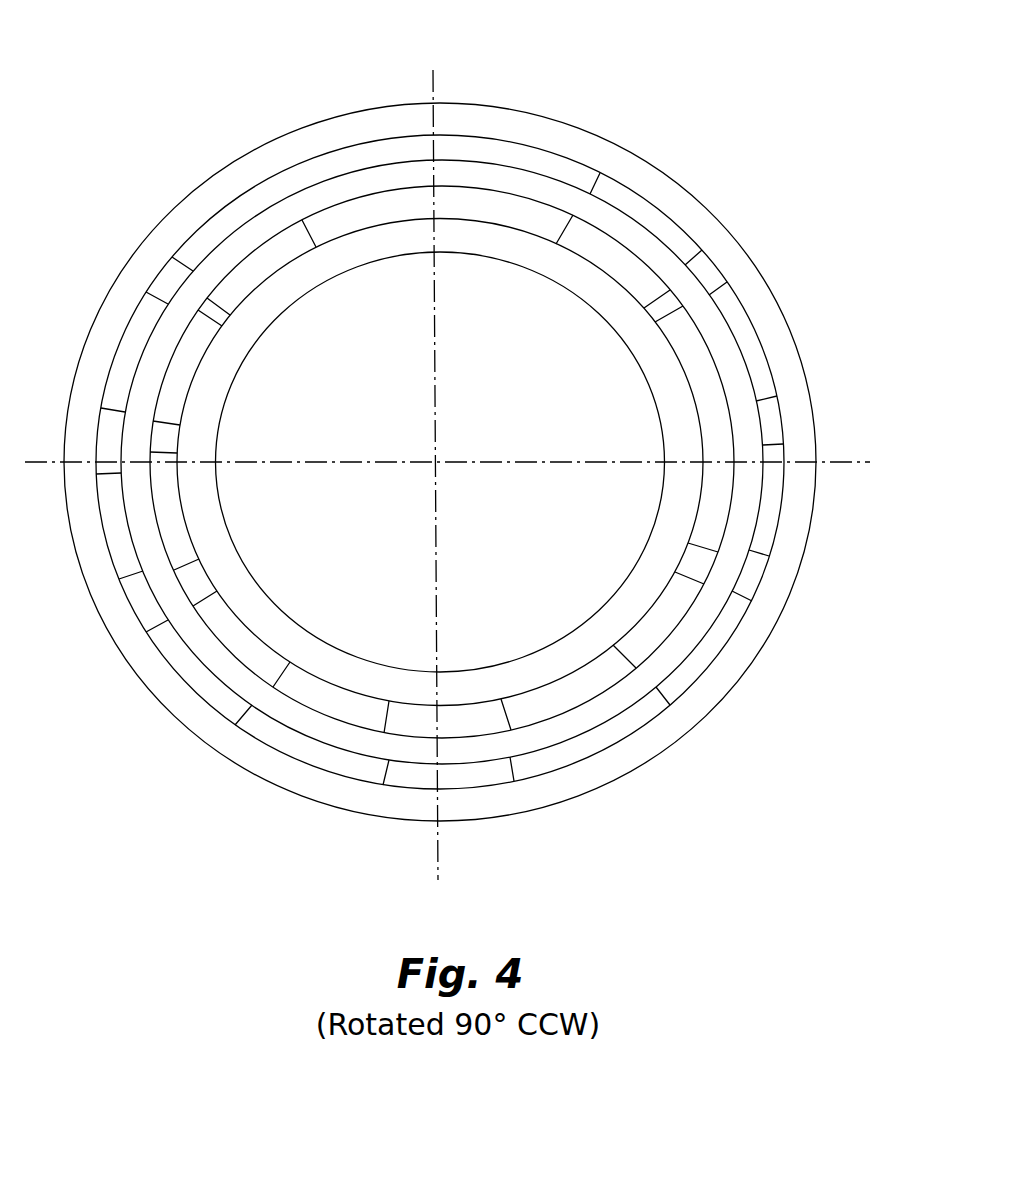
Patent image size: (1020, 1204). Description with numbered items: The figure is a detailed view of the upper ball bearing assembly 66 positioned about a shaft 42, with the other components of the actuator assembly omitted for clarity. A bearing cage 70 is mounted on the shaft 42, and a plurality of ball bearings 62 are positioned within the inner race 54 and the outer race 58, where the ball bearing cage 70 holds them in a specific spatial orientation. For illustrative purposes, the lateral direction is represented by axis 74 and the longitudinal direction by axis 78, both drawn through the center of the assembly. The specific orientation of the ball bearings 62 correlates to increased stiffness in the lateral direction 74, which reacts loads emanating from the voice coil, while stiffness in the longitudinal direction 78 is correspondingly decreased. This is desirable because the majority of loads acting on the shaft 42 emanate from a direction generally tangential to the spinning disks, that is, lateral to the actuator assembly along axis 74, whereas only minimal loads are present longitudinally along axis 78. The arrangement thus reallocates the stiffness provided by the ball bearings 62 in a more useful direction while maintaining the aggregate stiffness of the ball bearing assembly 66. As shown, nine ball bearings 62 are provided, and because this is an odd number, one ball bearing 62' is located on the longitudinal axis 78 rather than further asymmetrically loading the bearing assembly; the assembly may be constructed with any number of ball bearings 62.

The shaft 42 is at (320, 360).
The inner race 54 is at (567, 263).
The outer race 58 is at (702, 228).
The ball bearings 62 is at (439, 399).
The ball bearing 62' is at (477, 814).
The upper ball bearing assembly 66 is at (318, 93).
The bearing cage 70 is at (747, 407).
The axis 74 is at (848, 456).
The axis 78 is at (436, 74).